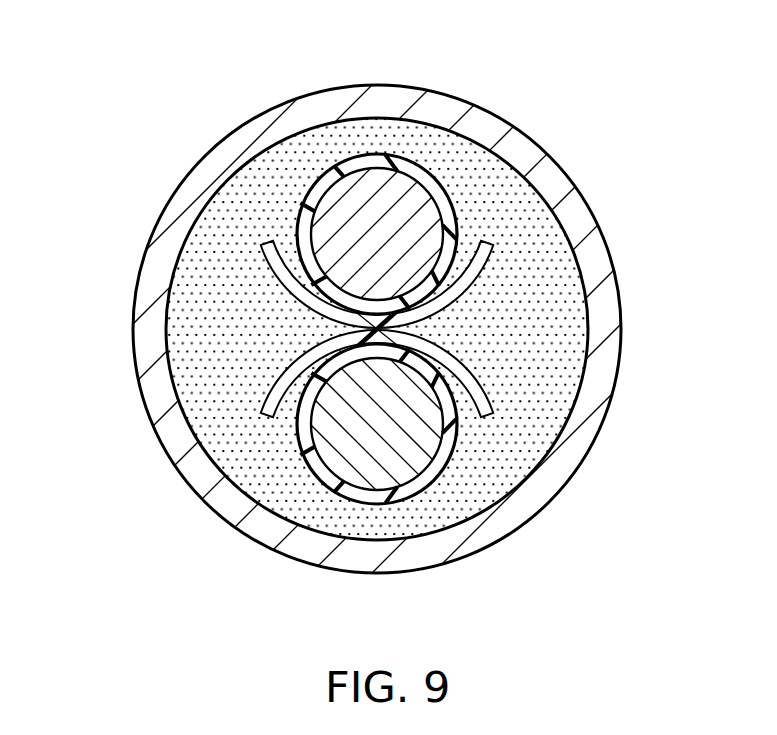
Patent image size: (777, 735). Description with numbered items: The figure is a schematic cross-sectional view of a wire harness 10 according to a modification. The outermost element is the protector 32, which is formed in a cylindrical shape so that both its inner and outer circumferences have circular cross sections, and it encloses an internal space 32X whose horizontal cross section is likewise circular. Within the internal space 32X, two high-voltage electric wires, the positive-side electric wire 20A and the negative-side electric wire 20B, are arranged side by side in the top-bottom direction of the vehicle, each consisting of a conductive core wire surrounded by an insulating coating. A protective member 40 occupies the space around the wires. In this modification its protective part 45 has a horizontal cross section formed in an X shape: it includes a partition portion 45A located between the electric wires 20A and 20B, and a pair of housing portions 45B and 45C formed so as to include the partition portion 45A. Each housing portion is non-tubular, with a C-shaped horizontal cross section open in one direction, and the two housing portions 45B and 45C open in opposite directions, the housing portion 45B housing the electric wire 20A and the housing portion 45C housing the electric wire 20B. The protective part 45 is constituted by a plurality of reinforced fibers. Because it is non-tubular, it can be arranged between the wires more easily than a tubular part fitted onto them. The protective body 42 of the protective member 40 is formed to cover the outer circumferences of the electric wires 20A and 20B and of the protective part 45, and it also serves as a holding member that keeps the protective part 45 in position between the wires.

The wire harness 10 is at (388, 350).
The positive-side electric wire 20A is at (428, 157).
The negative-side electric wire 20B is at (394, 470).
The protector 32 is at (605, 413).
The internal space 32X is at (552, 433).
The protective member 40 is at (372, 329).
The protective body 42 is at (562, 352).
The protective part 45 is at (349, 329).
The partition portion 45A is at (358, 330).
The housing portion 45B is at (300, 290).
The housing portion 45C is at (300, 370).